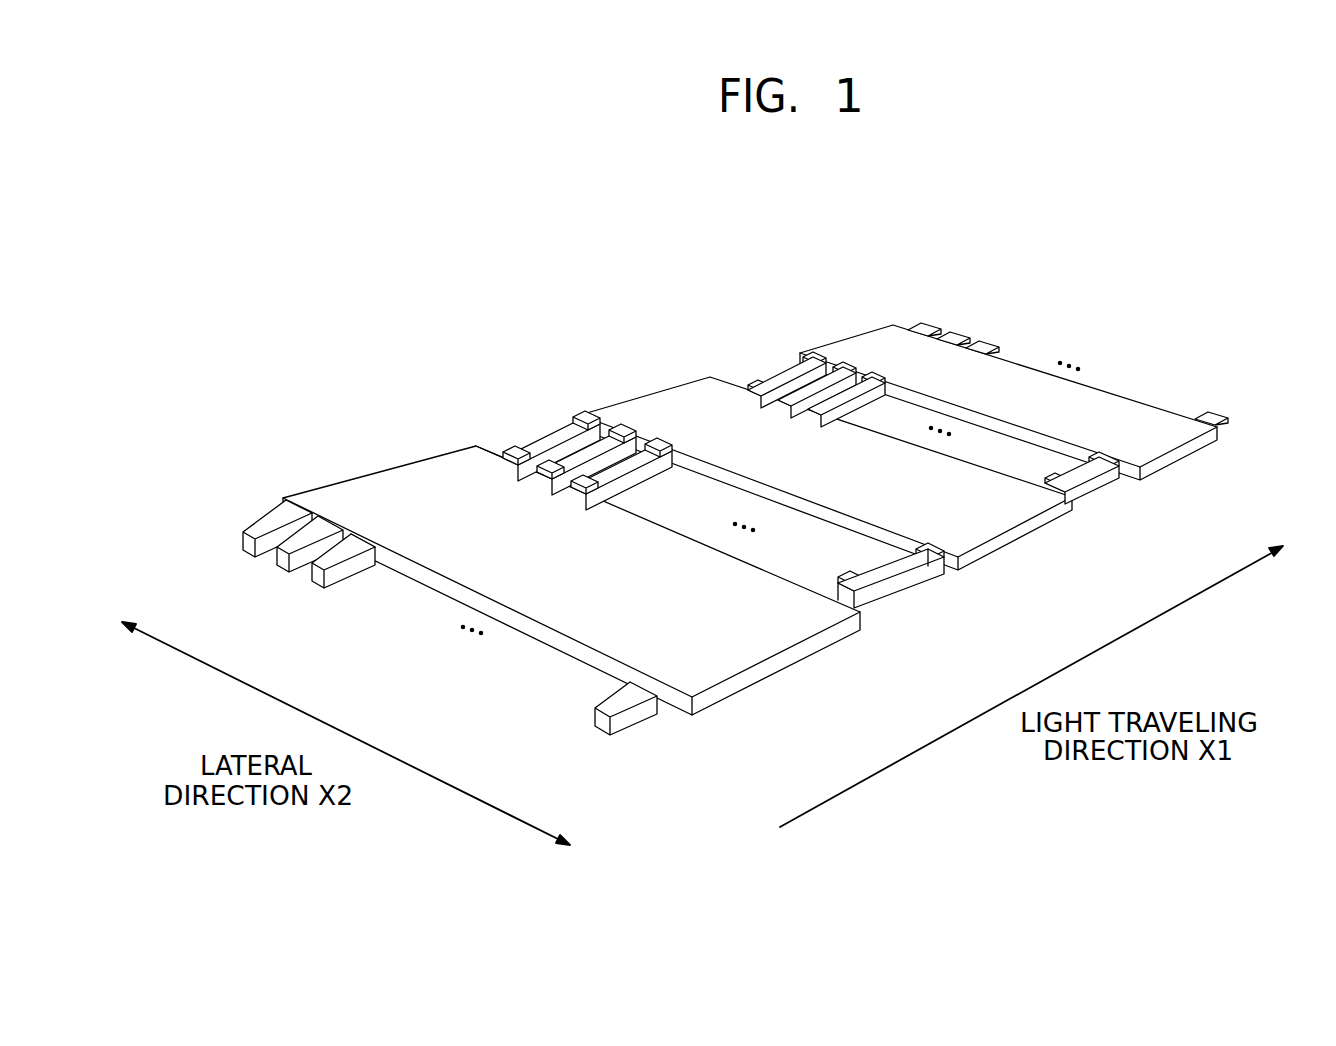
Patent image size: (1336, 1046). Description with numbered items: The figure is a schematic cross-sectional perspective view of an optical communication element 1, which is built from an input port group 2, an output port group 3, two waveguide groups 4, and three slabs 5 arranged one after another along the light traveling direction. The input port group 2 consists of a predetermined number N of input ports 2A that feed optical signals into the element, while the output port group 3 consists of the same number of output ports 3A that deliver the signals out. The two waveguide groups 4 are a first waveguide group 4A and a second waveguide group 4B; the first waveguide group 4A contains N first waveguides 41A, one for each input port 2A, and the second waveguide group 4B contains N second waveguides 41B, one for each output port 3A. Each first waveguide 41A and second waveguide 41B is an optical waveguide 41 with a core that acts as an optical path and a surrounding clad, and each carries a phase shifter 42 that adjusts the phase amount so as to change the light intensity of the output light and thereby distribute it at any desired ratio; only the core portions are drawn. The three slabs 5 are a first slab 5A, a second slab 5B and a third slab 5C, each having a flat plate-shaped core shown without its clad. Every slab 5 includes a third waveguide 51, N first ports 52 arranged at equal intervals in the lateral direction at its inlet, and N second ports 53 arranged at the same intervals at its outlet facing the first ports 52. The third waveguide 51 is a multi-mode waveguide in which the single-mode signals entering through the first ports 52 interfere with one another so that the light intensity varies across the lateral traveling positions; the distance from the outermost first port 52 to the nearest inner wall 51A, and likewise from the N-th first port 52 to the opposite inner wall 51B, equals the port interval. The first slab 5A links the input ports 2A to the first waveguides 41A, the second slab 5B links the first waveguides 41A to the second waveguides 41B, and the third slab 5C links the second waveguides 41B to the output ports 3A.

The optical communication element 1 is at (1071, 264).
The input port group 2 is at (415, 631).
The input port 2A is at (243, 550).
The output port group 3 is at (1079, 333).
The output port 3A is at (992, 345).
The waveguide group 4 is at (791, 464).
The first waveguide group 4A is at (791, 480).
The second waveguide group 4B is at (915, 402).
The connecting member 41 is at (600, 493).
The first waveguide 41A is at (930, 648).
The second waveguide 41B is at (745, 383).
The phase shifter 42 is at (575, 478).
The slab 5 is at (743, 521).
The first slab 5A is at (552, 588).
The second slab 5B is at (641, 375).
The third slab 5C is at (843, 319).
The third waveguide 51 is at (552, 608).
The inner wall 51A is at (328, 496).
The inner wall 51B is at (700, 688).
The first port 52 is at (300, 494).
The second port 53 is at (480, 455).